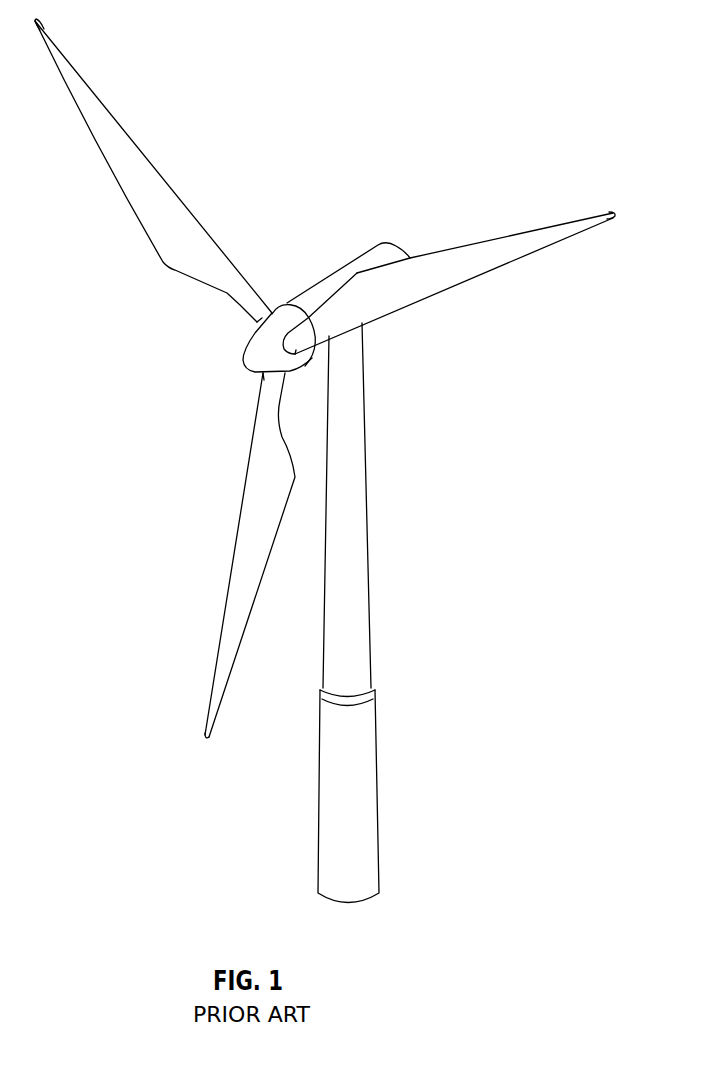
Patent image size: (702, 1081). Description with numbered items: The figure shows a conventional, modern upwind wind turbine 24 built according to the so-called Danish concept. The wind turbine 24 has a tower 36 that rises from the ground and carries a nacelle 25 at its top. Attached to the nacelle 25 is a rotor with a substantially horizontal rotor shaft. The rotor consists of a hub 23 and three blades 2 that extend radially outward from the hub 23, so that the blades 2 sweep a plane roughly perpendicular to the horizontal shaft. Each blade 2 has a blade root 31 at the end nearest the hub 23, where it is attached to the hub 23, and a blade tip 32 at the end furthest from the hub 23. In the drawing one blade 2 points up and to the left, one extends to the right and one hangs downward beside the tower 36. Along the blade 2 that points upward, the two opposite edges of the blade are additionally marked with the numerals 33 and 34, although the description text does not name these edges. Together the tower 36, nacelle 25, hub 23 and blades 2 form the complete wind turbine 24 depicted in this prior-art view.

The blade 2 is at (325, 386).
The hub 23 is at (244, 359).
The wind turbine 24 is at (325, 461).
The nacelle 25 is at (310, 298).
The blade root 31 is at (259, 321).
The blade tip 32 is at (72, 66).
The leading edge 33 is at (98, 147).
The trailing edge 34 is at (141, 151).
The tower 36 is at (358, 431).